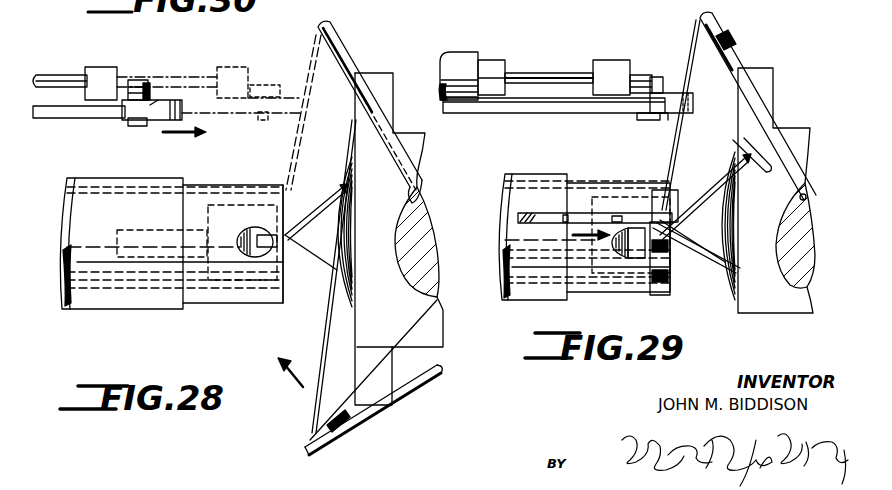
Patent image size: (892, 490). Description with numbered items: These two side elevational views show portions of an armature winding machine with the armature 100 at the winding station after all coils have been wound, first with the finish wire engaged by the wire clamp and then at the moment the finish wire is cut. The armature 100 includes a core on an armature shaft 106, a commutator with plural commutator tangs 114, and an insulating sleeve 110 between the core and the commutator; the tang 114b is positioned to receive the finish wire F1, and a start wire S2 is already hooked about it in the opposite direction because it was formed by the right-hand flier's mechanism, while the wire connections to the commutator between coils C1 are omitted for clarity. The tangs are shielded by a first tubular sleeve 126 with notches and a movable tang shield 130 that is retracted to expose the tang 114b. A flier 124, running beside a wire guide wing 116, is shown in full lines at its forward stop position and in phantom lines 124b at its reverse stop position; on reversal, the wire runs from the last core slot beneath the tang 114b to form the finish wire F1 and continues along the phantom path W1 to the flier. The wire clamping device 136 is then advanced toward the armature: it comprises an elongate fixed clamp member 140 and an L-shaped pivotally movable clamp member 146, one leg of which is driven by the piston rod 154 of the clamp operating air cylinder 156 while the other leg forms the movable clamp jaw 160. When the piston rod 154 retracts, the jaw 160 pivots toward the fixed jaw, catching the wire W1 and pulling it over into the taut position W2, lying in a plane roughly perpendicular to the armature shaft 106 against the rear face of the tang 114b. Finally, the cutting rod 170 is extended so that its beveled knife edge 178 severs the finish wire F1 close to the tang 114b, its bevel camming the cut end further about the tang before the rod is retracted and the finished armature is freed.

In FIG. 28, the piston rod 154 is at (40, 77).
In FIG. 29, the piston rod 154 is at (563, 72).
In FIG. 28, the wire clamping device 136 is at (150, 60).
In FIG. 29, the wire clamping device 136 is at (595, 44).
In FIG. 28, the pivotally movable clamp member 146 is at (150, 108).
In FIG. 28, the fixed clamp member 140 is at (78, 119).
In FIG. 29, the fixed clamp member 140 is at (560, 114).
In FIG. 28, the movable clamp jaw 160 is at (153, 121).
In FIG. 29, the movable clamp jaw 160 is at (681, 113).
In FIG. 28, the movable tang shield 130 is at (148, 210).
In FIG. 28, the commutator tang 114b is at (268, 225).
In FIG. 29, the commutator tang 114b is at (641, 260).
In FIG. 28, the wire path W1 is at (297, 131).
In FIG. 28, the armature 100 is at (347, 158).
In FIG. 28, the flier at reverse stop position 124b is at (341, 42).
In FIG. 28, the wire guide wing 116 is at (416, 152).
In FIG. 29, the wire guide wing 116 is at (766, 95).
In FIG. 28, the finish wire F1 is at (330, 196).
In FIG. 29, the finish wire F1 is at (719, 180).
In FIG. 28, the start wire S2 is at (332, 272).
In FIG. 29, the start wire S2 is at (713, 268).
In FIG. 28, the wire connections to commutator between coils C1 is at (343, 310).
In FIG. 29, the wire connections to commutator between coils C1 is at (723, 290).
In FIG. 28, the first tubular sleeve 126 is at (214, 310).
In FIG. 28, the commutator tangs 114 is at (278, 305).
In FIG. 28, the flier 124 is at (380, 422).
In FIG. 29, the clamp operating air cylinder 156 is at (457, 57).
In FIG. 29, the clamped wire section W2 is at (668, 145).
In FIG. 29, the cutting rod 170 is at (603, 212).
In FIG. 29, the armature shaft 106 is at (502, 228).
In FIG. 29, the knife edge 178 is at (668, 206).
In FIG. 29, the insulating sleeve 110 is at (740, 262).